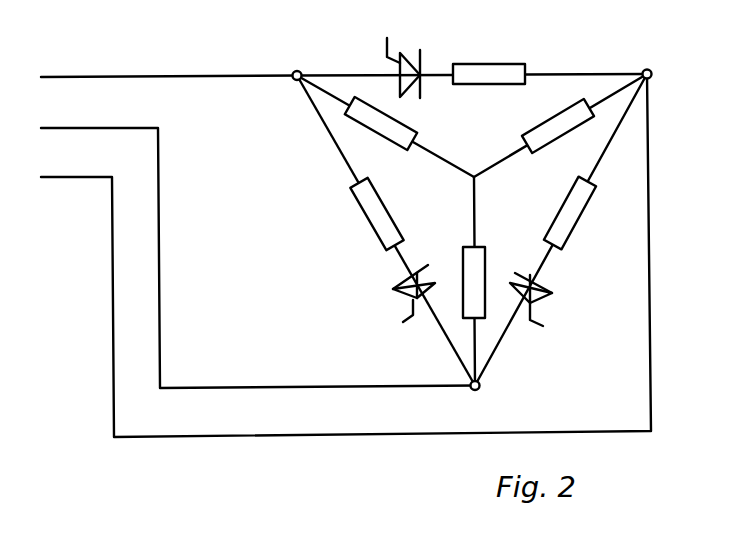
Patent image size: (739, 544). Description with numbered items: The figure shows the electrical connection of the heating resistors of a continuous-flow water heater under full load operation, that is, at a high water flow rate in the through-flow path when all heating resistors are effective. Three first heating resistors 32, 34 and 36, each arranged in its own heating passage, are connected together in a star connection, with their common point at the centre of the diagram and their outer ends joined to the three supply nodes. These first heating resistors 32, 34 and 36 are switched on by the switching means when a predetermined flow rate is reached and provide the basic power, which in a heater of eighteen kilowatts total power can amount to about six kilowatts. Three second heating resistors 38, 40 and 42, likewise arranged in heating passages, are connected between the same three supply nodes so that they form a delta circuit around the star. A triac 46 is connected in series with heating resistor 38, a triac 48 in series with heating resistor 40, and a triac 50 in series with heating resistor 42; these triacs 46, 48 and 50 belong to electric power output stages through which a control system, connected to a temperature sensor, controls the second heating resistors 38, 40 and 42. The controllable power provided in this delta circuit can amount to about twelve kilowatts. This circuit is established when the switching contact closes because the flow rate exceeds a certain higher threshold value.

The first heating resistor 32 is at (475, 290).
The first heating resistor 34 is at (392, 128).
The first heating resistor 36 is at (558, 123).
The second heating resistor 38 is at (487, 73).
The second heating resistor 40 is at (567, 215).
The second heating resistor 42 is at (375, 228).
The triac 46 is at (414, 62).
The triac 48 is at (545, 295).
The triac 50 is at (398, 298).